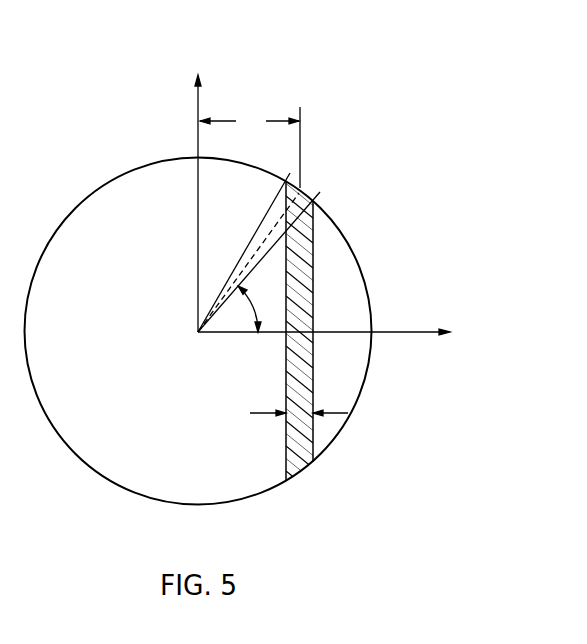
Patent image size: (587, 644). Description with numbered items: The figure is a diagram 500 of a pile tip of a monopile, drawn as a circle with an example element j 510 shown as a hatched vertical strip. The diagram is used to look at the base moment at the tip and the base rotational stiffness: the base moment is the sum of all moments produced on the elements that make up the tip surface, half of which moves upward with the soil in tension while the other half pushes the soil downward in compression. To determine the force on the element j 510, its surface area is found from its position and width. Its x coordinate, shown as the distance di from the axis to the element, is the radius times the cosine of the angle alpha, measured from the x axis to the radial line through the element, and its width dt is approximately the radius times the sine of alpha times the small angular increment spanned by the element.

The diagram 500 is at (245, 260).
The element j 510 is at (284, 373).
The distance d_i from y-axis to element center di is at (249, 119).
The angle alpha is at (255, 309).
The element thickness delta t dt is at (299, 428).